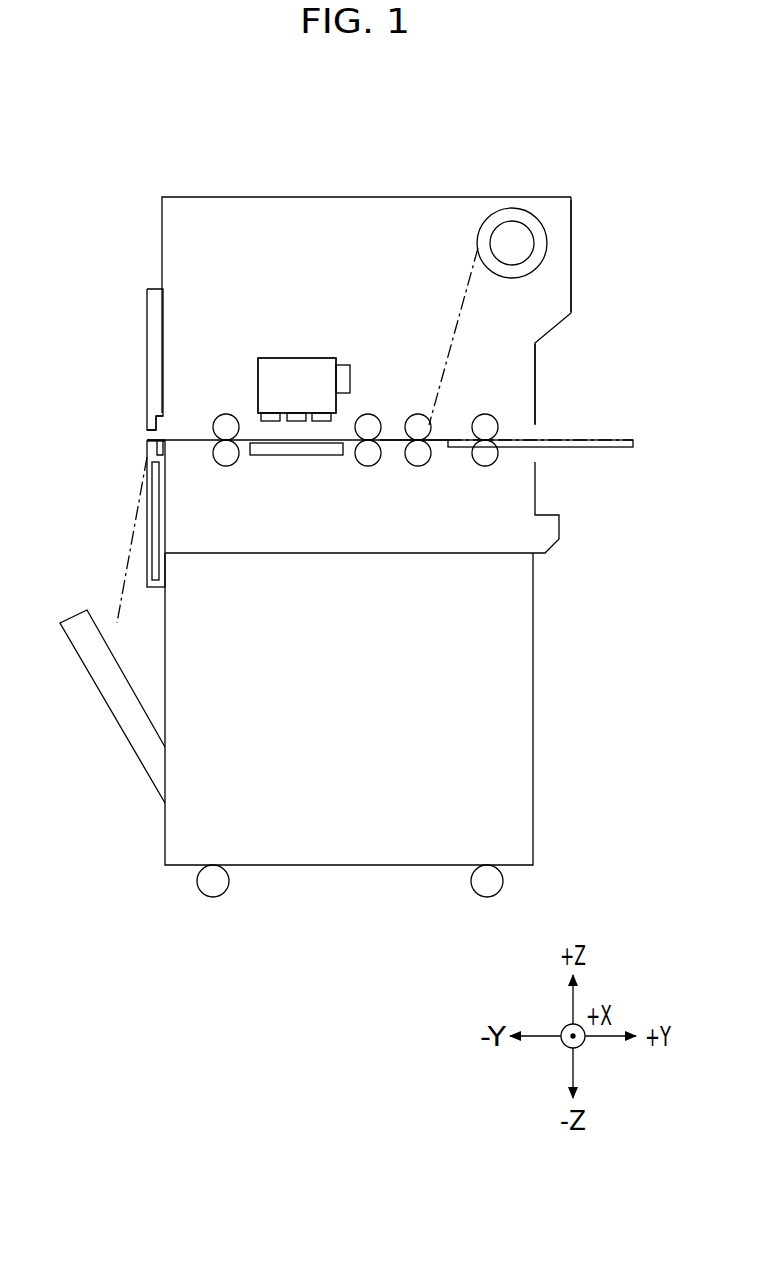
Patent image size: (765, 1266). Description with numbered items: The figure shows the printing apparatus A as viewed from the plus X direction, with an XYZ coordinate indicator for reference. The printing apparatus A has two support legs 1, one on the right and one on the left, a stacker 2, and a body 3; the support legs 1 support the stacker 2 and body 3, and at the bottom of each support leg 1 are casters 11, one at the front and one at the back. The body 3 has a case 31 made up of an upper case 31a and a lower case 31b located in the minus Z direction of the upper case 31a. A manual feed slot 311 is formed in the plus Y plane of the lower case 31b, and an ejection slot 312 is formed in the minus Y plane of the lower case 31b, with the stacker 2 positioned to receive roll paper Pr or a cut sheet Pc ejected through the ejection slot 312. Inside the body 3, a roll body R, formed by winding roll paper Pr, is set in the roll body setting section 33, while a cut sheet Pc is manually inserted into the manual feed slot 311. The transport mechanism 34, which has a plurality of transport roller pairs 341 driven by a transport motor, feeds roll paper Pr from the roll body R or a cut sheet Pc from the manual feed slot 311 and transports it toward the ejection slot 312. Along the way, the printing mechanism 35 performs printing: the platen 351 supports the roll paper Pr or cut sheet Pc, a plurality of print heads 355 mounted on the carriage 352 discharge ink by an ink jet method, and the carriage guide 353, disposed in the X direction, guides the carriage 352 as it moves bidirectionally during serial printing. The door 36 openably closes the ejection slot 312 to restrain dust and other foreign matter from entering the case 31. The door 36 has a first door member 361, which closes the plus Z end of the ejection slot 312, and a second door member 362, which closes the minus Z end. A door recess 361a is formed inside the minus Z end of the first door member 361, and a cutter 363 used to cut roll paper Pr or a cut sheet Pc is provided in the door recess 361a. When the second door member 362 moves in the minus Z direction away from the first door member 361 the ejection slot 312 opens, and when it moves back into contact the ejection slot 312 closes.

The support leg 1 is at (515, 745).
The stacker 2 is at (105, 697).
The body 3 is at (233, 190).
The caster 11 is at (213, 897).
The case 31 is at (695, 243).
The upper case 31a is at (560, 252).
The lower case 31b is at (505, 360).
The roll body setting section 33 is at (530, 232).
The transport mechanism 34 is at (520, 459).
The printing mechanism 35 is at (284, 352).
The door 36 is at (155, 603).
The manual feed slot 311 is at (537, 438).
The ejection slot 312 is at (150, 436).
The transport roller pair 341 is at (233, 457).
The platen 351 is at (303, 456).
The carriage 352 is at (270, 368).
The carriage guide 353 is at (345, 378).
The print head 355 is at (275, 420).
The first door member 361 is at (155, 339).
The door recess 361a is at (147, 426).
The second door member 362 is at (152, 512).
The cutter 363 is at (160, 415).
The printing apparatus A is at (350, 134).
The roll body R is at (516, 208).
The roll paper Pr is at (465, 307).
The cut sheet Pc is at (620, 438).